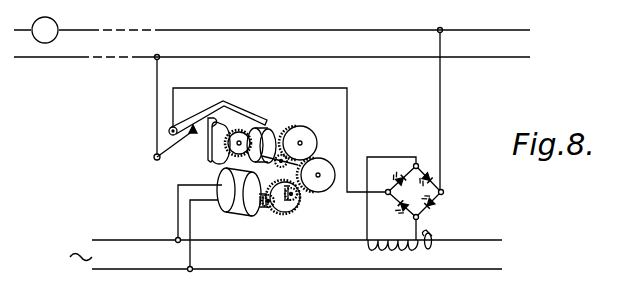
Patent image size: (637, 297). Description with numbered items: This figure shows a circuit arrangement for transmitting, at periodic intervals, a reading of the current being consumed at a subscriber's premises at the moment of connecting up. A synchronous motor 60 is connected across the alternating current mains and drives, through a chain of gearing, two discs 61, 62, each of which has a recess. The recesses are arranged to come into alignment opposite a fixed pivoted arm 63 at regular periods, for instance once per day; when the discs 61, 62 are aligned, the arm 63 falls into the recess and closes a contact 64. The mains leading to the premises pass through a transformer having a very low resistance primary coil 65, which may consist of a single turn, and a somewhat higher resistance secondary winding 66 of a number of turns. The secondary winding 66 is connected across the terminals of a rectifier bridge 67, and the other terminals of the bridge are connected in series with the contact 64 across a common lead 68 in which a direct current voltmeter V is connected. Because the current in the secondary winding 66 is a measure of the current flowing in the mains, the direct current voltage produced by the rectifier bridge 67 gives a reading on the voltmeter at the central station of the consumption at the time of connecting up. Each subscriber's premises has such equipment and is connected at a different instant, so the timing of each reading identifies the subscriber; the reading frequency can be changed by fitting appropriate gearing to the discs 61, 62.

The synchronous motor 60 is at (229, 198).
The disc 61 is at (283, 131).
The disc 62 is at (215, 152).
The pivoted arm 63 is at (258, 118).
The contact 64 is at (192, 126).
The primary coil 65 is at (433, 234).
The secondary winding 66 is at (385, 232).
The rectifier bridge 67 is at (443, 183).
The common lead 68 is at (530, 30).